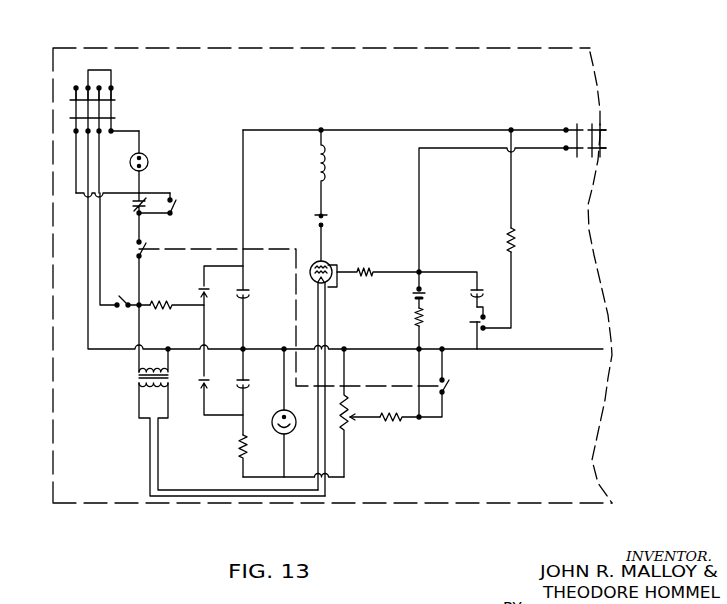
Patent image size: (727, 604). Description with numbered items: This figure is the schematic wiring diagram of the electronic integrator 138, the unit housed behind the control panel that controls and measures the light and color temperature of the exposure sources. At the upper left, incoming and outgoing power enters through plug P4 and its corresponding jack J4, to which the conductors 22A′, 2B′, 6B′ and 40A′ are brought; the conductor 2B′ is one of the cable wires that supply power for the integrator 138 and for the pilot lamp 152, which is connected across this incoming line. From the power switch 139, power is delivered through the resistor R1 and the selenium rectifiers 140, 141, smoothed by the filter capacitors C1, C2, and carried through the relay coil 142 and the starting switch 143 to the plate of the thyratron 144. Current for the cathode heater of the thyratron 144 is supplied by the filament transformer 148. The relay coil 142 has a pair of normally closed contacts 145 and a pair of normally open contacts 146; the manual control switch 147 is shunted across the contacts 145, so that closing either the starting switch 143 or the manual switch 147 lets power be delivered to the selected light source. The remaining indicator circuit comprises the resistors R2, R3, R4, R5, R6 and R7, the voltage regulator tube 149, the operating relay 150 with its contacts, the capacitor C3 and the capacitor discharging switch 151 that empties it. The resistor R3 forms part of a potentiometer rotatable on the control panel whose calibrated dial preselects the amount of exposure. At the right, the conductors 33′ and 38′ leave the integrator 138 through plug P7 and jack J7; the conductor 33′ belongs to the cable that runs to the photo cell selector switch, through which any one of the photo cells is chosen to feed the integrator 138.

The electronic integrator 138 is at (508, 52).
The conductor 22A′ is at (74, 98).
The conductor 2B′ is at (88, 98).
The conductor 6B′ is at (100, 96).
The conductor 40A′ is at (112, 98).
The jack J4 is at (115, 100).
The plug P4 is at (115, 118).
The pilot lamp 152 is at (148, 158).
The normally closed contacts 145 is at (137, 203).
The manual control switch 147 is at (176, 209).
The operating relay 150 is at (137, 247).
The power switch 139 is at (130, 287).
The resistor R1 is at (177, 294).
The selenium rectifier 140 is at (205, 294).
The selenium rectifier 141 is at (204, 389).
The filter capacitor C1 is at (251, 295).
The filter capacitor C2 is at (248, 385).
The resistor R2 is at (240, 447).
The voltage regulator tube 149 is at (278, 433).
The filament transformer 148 is at (135, 380).
The relay coil 142 is at (329, 166).
The starting switch 143 is at (325, 219).
The thyratron 144 is at (324, 262).
The resistor R5 is at (370, 271).
The normally open contacts 146 is at (424, 292).
The resistor R6 is at (423, 318).
The capacitor C3 is at (483, 291).
The capacitor discharging switch 151 is at (487, 320).
The resistor R7 is at (516, 240).
The resistor R3 is at (349, 409).
The resistor R4 is at (392, 421).
The plug P7 is at (577, 128).
The jack J7 is at (600, 130).
The conductor 33′ is at (601, 129).
The conductor 38′ is at (601, 148).